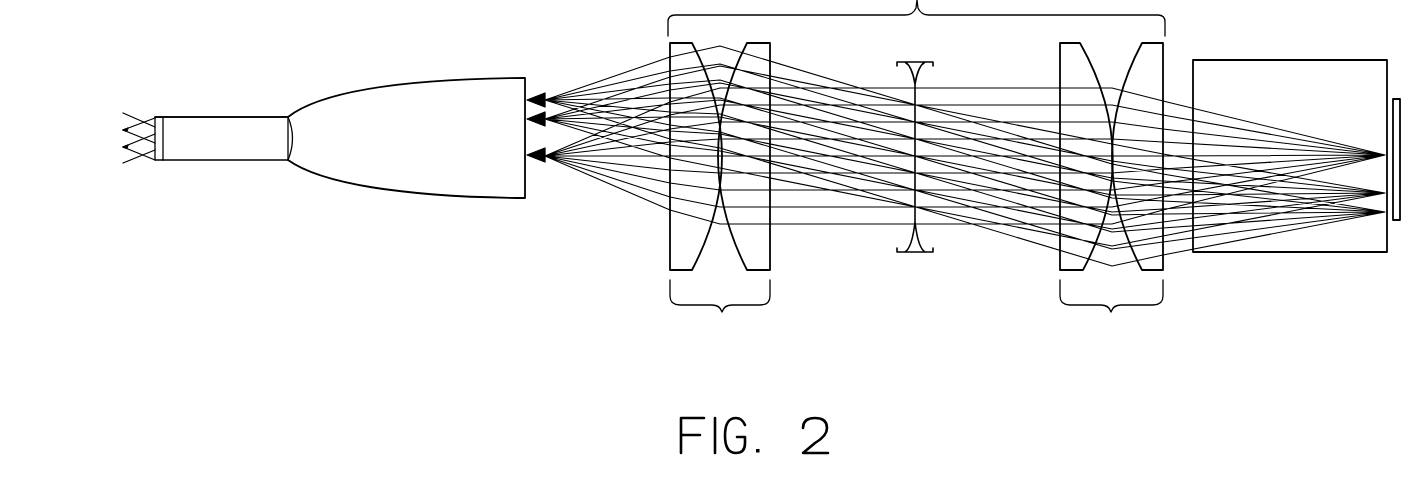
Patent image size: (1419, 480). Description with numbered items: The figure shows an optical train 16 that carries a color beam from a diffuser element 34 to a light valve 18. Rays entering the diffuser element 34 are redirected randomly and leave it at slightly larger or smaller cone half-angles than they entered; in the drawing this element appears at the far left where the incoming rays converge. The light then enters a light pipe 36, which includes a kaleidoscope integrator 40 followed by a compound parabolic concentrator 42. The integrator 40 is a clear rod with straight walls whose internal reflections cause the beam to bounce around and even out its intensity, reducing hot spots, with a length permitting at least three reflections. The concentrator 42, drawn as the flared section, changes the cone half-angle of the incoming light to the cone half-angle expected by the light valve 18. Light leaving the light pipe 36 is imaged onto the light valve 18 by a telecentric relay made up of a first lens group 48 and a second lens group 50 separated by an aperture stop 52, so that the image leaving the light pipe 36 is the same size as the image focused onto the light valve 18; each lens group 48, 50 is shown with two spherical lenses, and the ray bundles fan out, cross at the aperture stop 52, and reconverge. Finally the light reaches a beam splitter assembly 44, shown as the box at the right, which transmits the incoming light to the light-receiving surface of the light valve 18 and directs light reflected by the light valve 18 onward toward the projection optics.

The optical train 16 is at (917, 347).
The light valve 18 is at (1398, 118).
The diffuser element 34 is at (160, 164).
The light pipe 36 is at (199, 114).
The kaleidoscope integrator 40 is at (215, 163).
The compound parabolic concentrator 42 is at (410, 80).
The beam splitter assembly 44 is at (1285, 254).
The first lens group 48 is at (722, 312).
The second lens group 50 is at (1111, 312).
The aperture stop 52 is at (905, 255).